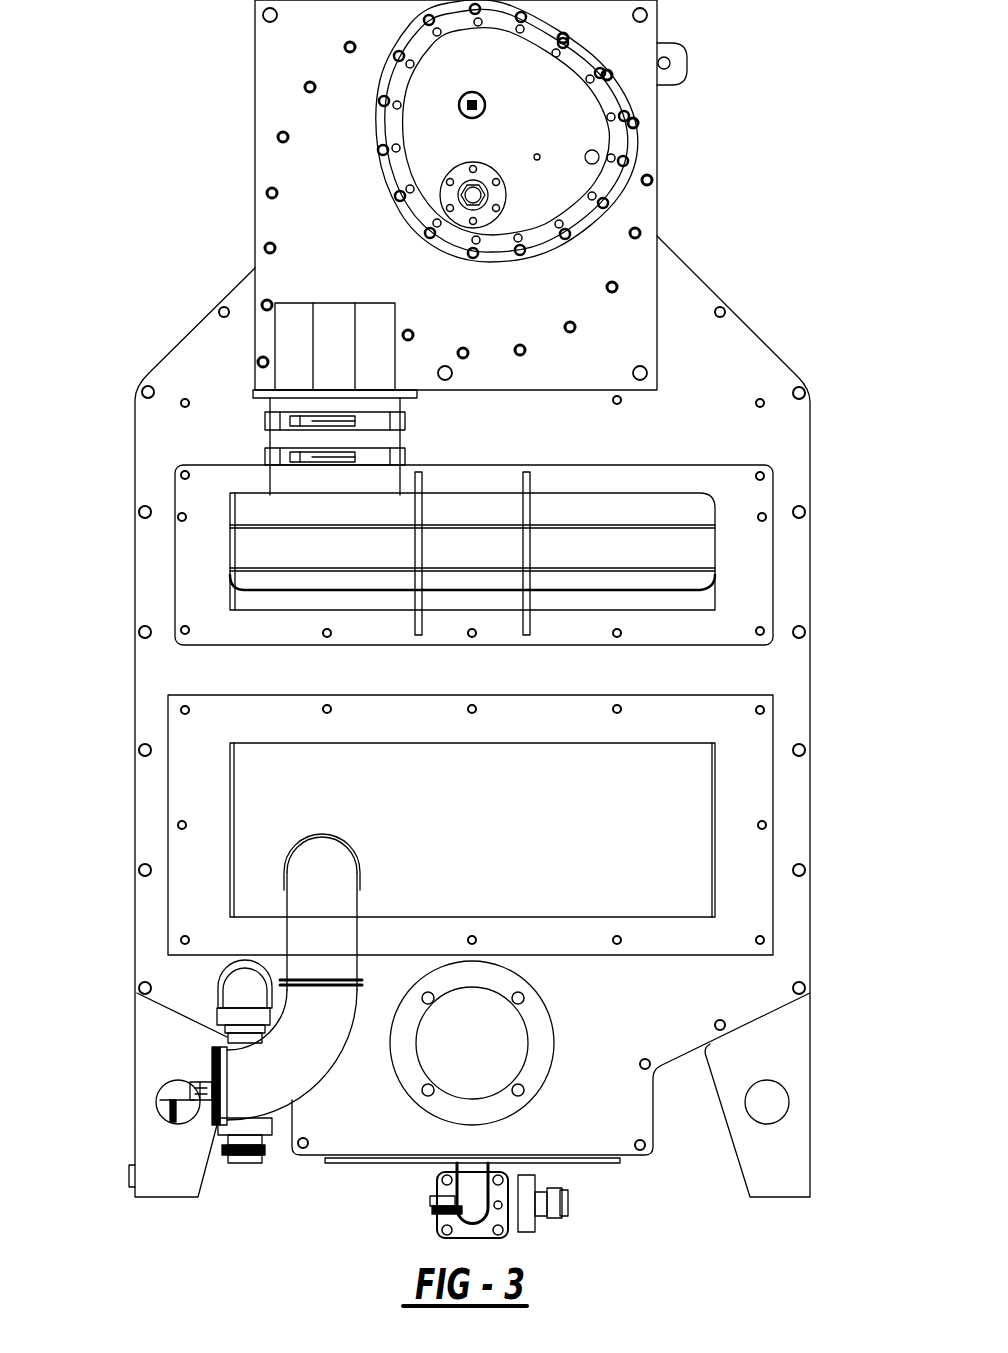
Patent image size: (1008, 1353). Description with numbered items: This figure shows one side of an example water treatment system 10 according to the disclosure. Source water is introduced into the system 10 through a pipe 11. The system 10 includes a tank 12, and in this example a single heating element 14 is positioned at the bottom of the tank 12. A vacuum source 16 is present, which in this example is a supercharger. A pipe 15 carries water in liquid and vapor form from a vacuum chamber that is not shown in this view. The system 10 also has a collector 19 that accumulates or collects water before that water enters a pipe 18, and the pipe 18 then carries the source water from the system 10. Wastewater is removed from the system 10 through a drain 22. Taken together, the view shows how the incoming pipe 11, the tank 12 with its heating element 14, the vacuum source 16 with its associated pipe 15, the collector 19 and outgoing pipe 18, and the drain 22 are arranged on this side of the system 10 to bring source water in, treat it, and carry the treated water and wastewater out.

The system 10 is at (163, 138).
The tank 12 is at (762, 338).
The heating element 14 is at (548, 1078).
The pipe 15 is at (265, 432).
The vacuum source 16 is at (657, 155).
The pipe 18 is at (232, 1165).
The collector 19 is at (716, 790).
The pipe 11 is at (273, 1107).
The drain 22 is at (432, 1200).